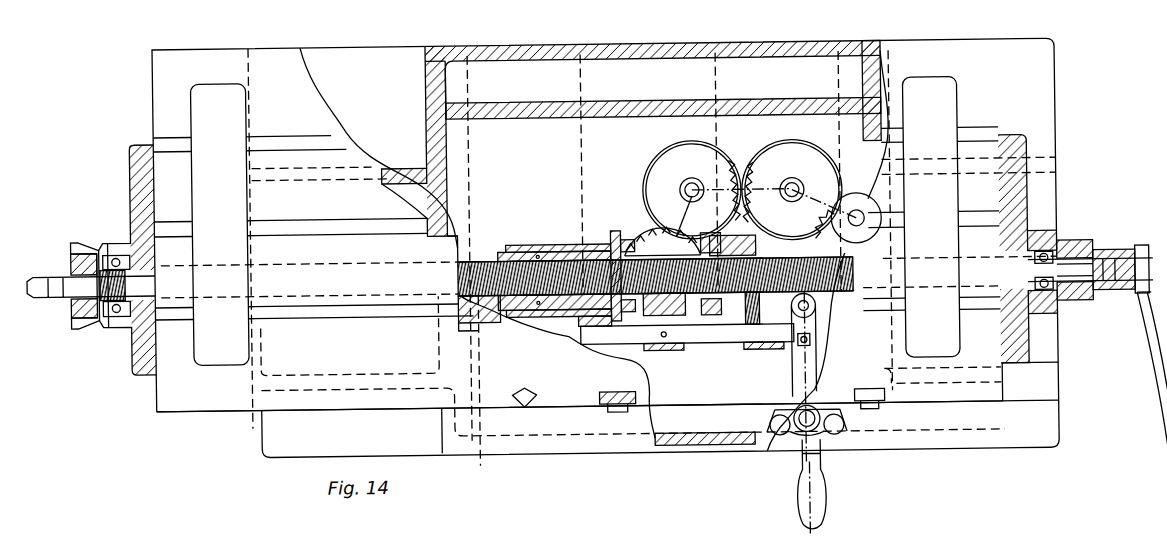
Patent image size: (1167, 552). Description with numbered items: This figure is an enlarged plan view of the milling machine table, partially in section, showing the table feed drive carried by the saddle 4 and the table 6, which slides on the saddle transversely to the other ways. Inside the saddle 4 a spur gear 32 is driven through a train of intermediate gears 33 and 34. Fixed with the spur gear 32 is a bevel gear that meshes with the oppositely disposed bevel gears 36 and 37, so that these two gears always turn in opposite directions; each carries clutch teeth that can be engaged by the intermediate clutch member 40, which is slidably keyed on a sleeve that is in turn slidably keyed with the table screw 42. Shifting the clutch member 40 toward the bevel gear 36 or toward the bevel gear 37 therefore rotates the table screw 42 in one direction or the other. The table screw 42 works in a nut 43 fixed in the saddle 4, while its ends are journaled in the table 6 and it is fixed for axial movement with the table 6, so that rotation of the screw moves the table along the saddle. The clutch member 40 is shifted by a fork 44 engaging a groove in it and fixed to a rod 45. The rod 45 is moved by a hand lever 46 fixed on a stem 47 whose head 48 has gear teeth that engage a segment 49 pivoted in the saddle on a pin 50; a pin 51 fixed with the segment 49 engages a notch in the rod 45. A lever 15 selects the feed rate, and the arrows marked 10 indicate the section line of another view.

The saddle 4 is at (565, 455).
The table 6 is at (998, 102).
The section line arrows 10 is at (778, 261).
The lever 15 is at (482, 262).
The spur gear 32 is at (652, 232).
The intermediate gear 33 is at (728, 165).
The intermediate gear 34 is at (816, 174).
The bevel gear 36 is at (610, 246).
The bevel gear 37 is at (696, 242).
The clutch member 40 is at (632, 242).
The table screw 42 is at (484, 321).
The nut 43 is at (515, 252).
The fork 44 is at (664, 352).
The rod 45 is at (714, 352).
The hand lever 46 is at (824, 509).
The stem 47 is at (818, 440).
The head 48 is at (795, 443).
The segment 49 is at (813, 387).
The pin 50 is at (806, 310).
The pin 51 is at (817, 354).